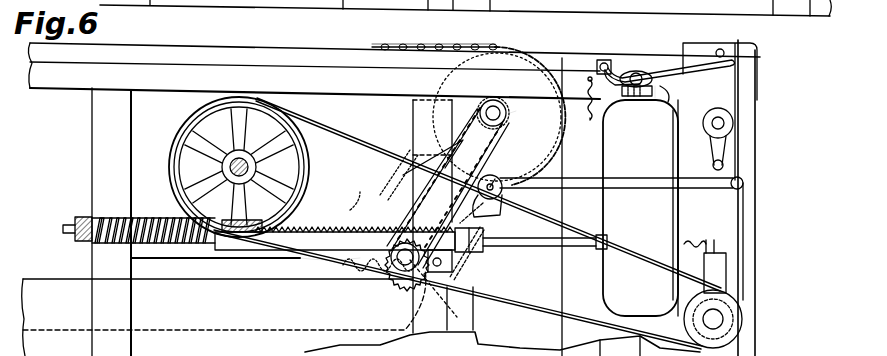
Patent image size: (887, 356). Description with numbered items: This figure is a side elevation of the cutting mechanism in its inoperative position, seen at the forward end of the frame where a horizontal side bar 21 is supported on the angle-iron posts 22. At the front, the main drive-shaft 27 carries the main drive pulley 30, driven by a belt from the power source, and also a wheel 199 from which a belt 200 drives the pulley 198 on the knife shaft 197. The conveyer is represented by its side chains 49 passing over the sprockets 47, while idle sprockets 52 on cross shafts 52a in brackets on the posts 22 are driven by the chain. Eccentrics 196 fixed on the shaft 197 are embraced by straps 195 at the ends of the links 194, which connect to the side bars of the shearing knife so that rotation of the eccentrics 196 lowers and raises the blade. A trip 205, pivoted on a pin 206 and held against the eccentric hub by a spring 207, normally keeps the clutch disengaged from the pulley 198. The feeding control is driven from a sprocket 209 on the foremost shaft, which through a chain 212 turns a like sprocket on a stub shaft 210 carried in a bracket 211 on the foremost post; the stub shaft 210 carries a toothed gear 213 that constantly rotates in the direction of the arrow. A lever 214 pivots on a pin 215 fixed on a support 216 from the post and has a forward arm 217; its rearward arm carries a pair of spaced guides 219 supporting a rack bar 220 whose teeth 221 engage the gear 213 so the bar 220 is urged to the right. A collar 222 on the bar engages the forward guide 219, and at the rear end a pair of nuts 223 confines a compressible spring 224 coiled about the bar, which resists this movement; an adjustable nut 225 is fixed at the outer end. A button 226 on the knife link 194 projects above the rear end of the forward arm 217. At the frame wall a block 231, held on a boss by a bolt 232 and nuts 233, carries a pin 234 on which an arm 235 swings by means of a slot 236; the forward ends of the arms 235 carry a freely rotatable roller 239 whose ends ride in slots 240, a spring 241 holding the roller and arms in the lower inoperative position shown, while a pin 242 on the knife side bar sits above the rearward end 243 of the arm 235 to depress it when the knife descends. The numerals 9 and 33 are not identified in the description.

The view direction arrow 9 is at (679, 34).
The side bars 21 is at (66, 80).
The posts 22 is at (92, 175).
The main drive-shaft 27 is at (197, 128).
The main drive pulley 30 is at (205, 96).
The sprocket 33 is at (522, 90).
The sprockets 47 is at (515, 52).
The side chains 49 is at (602, 6).
The idle sprockets 52 is at (316, 282).
The cross shafts 52a is at (390, 270).
The links 194 is at (730, 135).
The straps 195 is at (730, 282).
The eccentrics 196 is at (680, 292).
The shaft 197 is at (730, 328).
The pulley 198 is at (742, 316).
The wheel 199 is at (340, 170).
The belt 200 is at (608, 326).
The trip 205 is at (745, 240).
The pin 206 is at (750, 170).
The spring 207 is at (684, 244).
The sprocket 209 is at (508, 113).
The stub shaft 210 is at (452, 298).
The bracket 211 is at (470, 270).
The chain 212 is at (410, 192).
The toothed gear 213 is at (370, 202).
The lever 214 is at (512, 200).
The pin 215 is at (468, 187).
The support 216 is at (488, 222).
The forward arm 217 is at (662, 166).
The guides 219 is at (342, 230).
The rack bar 220 is at (548, 246).
The teeth 221 is at (322, 260).
The collar 222 is at (540, 262).
The nuts 223 is at (78, 245).
The compressible spring 224 is at (178, 216).
The adjustable nut 225 is at (608, 239).
The button 226 is at (725, 165).
The block 231 is at (637, 96).
The bolt 232 is at (647, 96).
The nuts 233 is at (668, 100).
The pin 234 is at (634, 70).
The arm 235 is at (705, 70).
The slot 236 is at (655, 72).
The roller 239 is at (495, 187).
The slots 240 is at (600, 60).
The spring 241 is at (586, 108).
The pin 242 is at (732, 55).
The rearward end 243 is at (735, 70).